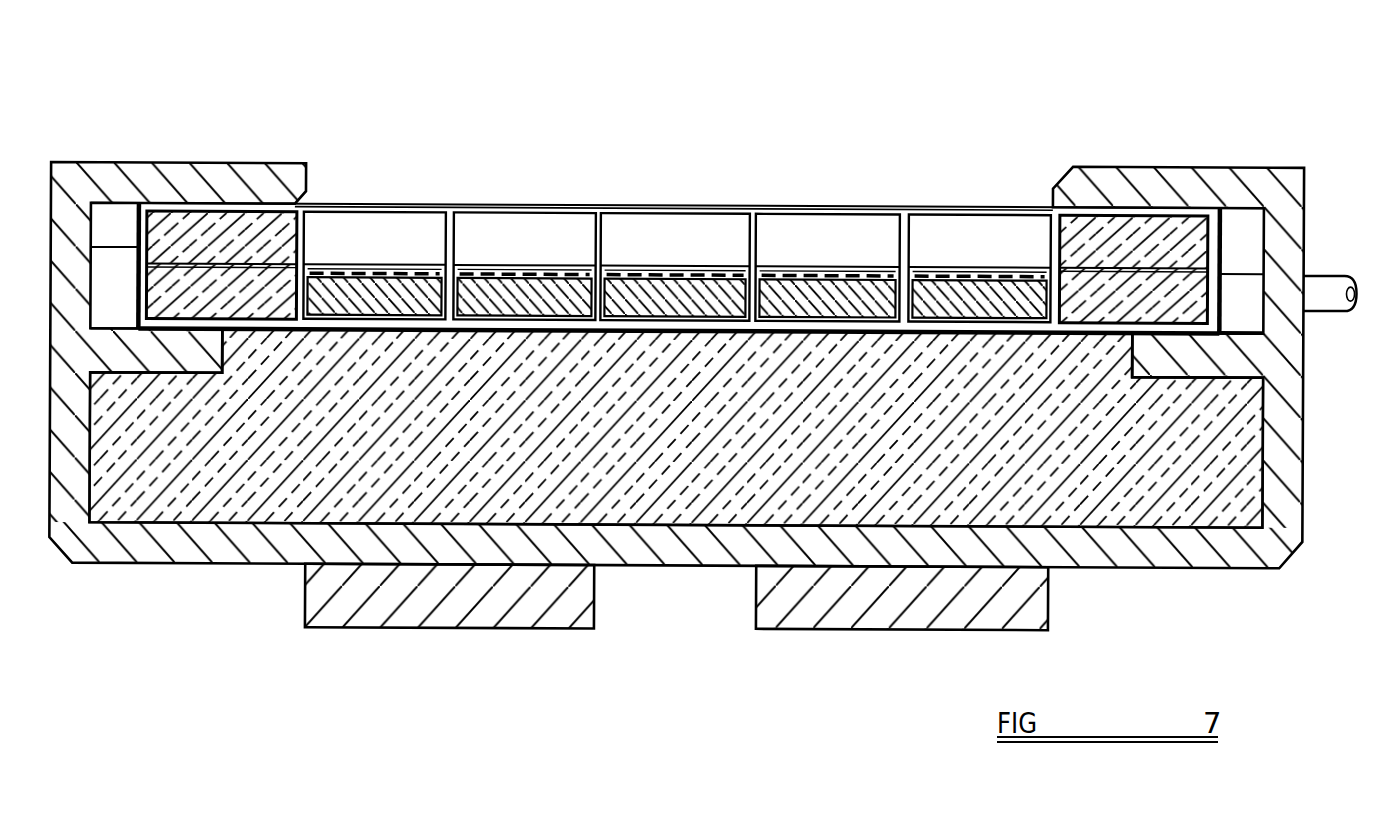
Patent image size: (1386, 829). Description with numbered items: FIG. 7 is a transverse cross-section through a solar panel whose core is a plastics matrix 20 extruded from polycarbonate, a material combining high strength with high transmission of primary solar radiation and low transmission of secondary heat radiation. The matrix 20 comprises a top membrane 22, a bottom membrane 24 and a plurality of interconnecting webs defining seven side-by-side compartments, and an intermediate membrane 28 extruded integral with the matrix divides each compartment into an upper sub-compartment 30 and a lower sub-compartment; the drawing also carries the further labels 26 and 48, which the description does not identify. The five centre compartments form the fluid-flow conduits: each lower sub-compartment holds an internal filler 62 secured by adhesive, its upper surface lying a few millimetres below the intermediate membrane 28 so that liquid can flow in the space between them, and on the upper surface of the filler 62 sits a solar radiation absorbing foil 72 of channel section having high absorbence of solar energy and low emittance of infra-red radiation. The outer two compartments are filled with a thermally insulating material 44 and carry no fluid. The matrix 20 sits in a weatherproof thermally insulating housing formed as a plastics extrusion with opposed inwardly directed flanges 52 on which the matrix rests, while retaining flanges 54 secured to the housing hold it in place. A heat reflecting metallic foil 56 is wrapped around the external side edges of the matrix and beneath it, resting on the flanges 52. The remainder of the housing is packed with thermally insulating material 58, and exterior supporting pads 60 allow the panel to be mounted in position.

The matrix 20 is at (573, 201).
The top membrane 22 is at (832, 205).
The bottom membrane 24 is at (385, 316).
The module substrate 26 is at (460, 248).
The intermediate membrane 28 is at (380, 266).
The upper sub-compartment 30 is at (701, 232).
The thermally insulating material 44 is at (160, 289).
The connector pin 48 is at (1330, 285).
The inwardly directed flanges 52 is at (150, 364).
The retaining flanges 54 is at (216, 178).
The heat reflecting metallic foil 56 is at (90, 247).
The thermally insulating material 58 is at (1133, 473).
The exterior supporting pads 60 is at (813, 626).
The internal filler 62 is at (876, 300).
The foil 72 is at (968, 270).